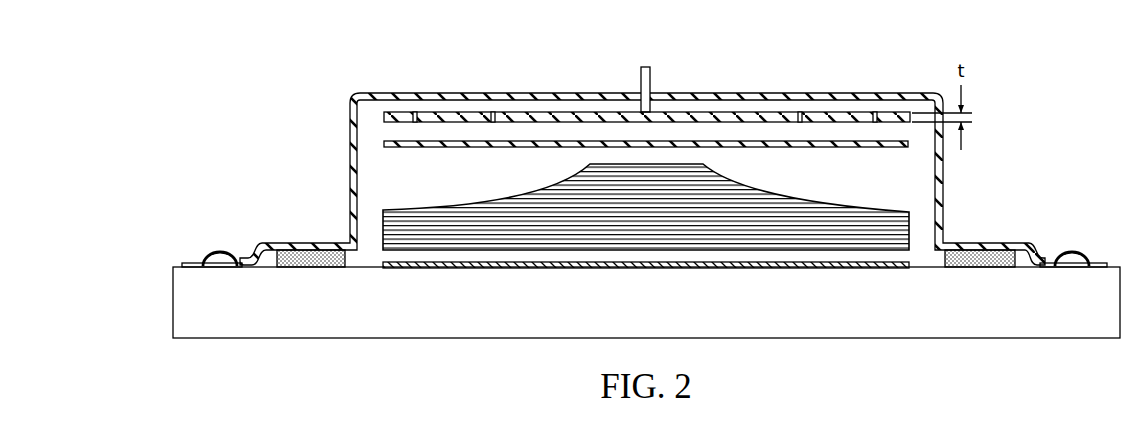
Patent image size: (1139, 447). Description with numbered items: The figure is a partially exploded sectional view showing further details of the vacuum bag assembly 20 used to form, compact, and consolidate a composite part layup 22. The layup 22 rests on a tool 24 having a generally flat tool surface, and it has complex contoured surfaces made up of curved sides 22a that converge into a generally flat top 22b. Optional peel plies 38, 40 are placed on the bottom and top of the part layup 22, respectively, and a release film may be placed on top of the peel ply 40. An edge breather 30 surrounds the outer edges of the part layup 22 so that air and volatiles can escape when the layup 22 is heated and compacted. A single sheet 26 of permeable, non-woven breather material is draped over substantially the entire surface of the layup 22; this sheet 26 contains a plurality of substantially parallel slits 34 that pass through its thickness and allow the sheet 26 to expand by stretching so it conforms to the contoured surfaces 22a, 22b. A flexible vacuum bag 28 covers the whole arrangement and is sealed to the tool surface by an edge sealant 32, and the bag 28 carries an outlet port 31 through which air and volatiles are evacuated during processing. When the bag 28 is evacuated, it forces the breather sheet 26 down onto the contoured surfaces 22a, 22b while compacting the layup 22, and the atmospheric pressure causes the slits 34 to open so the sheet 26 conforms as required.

The vacuum bag assembly 20 is at (250, 110).
The composite part layup 22 is at (480, 199).
The curved sides 22a is at (863, 207).
The flat top 22b is at (703, 163).
The tool 24 is at (168, 303).
The sheet of breather material 26 is at (546, 112).
The vacuum bag 28 is at (350, 168).
The edge breather 30 is at (307, 250).
The outlet port 31 is at (641, 78).
The edge sealant 32 is at (222, 252).
The slits 34 is at (415, 112).
The peel ply 38 is at (419, 268).
The peel ply 40 is at (812, 147).